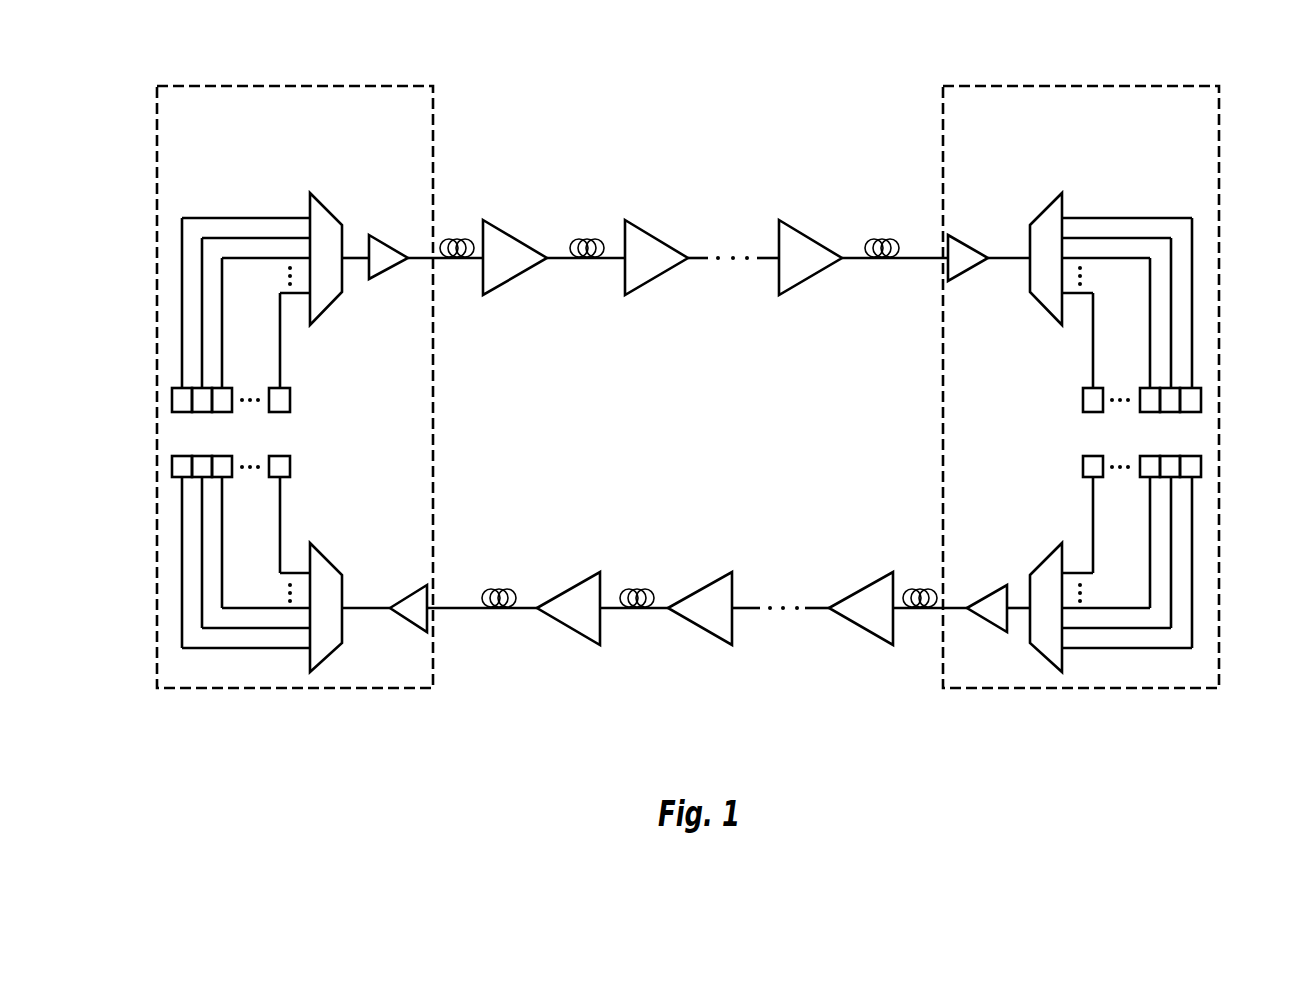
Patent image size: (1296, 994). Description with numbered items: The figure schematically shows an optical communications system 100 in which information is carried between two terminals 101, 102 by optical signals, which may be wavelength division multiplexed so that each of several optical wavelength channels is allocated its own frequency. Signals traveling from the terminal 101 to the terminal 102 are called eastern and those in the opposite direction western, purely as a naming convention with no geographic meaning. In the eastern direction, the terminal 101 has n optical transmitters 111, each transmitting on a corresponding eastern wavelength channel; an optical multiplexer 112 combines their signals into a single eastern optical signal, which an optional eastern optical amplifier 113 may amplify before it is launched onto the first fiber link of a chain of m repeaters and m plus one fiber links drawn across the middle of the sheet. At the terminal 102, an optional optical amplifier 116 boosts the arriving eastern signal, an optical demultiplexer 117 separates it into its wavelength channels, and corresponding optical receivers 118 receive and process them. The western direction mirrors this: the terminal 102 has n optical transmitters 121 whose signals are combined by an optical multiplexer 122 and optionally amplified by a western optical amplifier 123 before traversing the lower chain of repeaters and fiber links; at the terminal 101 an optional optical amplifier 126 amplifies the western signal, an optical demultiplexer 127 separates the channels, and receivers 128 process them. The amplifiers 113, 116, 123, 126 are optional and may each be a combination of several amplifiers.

The optical communications system 100 is at (710, 55).
The terminal 101 is at (362, 122).
The terminal 102 is at (1148, 122).
The optical transmitters 111 is at (274, 386).
The optical multiplexer 112 is at (328, 208).
The eastern optical amplifier 113 is at (398, 240).
The optical amplifier 116 is at (972, 245).
The optical demultiplexer 117 is at (1052, 208).
The optical receivers 118 is at (1100, 386).
The optical transmitters 121 is at (1091, 495).
The optical multiplexer 122 is at (1049, 562).
The western optical amplifier 123 is at (984, 620).
The optical amplifier 126 is at (407, 620).
The optical demultiplexer 127 is at (326, 562).
The receivers 128 is at (266, 495).